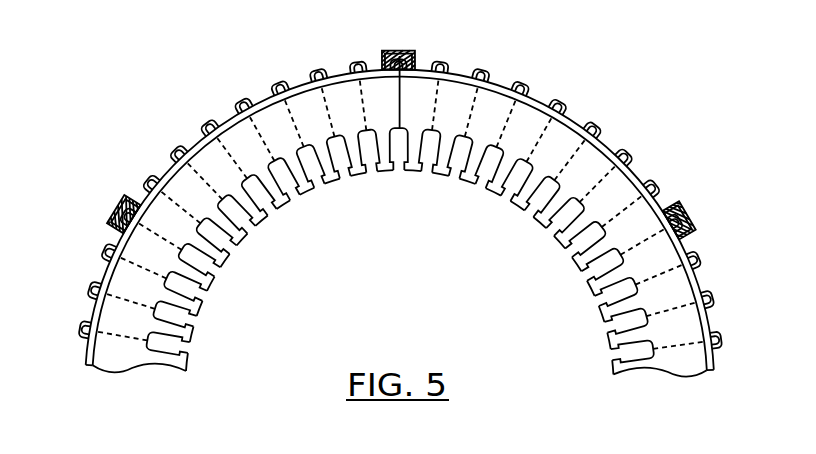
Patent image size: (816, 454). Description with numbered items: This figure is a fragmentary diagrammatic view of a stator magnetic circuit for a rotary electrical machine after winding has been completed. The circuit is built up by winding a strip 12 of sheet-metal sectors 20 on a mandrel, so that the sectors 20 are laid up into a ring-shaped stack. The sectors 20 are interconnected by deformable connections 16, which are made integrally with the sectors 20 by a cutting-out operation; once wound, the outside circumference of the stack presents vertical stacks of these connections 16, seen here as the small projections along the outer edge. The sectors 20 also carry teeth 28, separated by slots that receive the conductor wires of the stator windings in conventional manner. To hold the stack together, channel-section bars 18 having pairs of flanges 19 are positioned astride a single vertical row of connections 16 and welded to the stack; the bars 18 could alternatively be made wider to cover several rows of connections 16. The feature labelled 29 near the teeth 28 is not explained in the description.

The stator core 12 is at (680, 323).
The projections 16 is at (280, 84).
The fastening lug 18 is at (407, 53).
The roller 19 is at (384, 62).
The yoke band 20 is at (205, 165).
The slot 28 is at (190, 273).
The slot opening ledge 29 is at (192, 295).